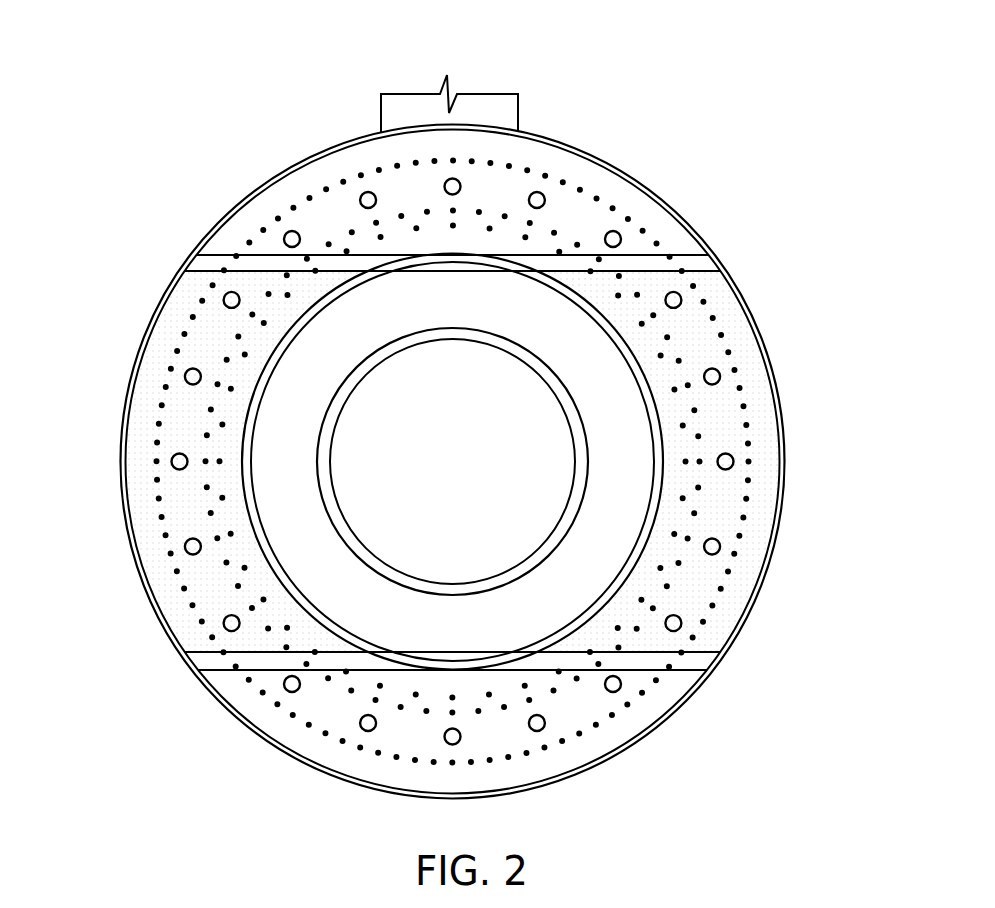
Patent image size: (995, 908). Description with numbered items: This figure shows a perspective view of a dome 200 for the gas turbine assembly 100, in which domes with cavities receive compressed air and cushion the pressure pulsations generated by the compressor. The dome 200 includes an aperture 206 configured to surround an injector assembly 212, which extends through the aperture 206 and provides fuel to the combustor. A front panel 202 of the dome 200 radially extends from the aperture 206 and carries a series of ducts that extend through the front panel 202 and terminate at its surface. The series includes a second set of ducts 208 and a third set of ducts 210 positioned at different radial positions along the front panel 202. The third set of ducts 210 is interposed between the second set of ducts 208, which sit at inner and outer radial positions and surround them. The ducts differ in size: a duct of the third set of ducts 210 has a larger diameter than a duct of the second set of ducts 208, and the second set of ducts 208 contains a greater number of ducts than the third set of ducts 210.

The gas turbine assembly 100 is at (448, 420).
The dome 200 is at (448, 420).
The front panel 202 is at (160, 252).
The aperture 206 is at (647, 523).
The second set of ducts 208 is at (352, 232).
The third set of ducts 210 is at (630, 243).
The injector assembly 212 is at (375, 118).